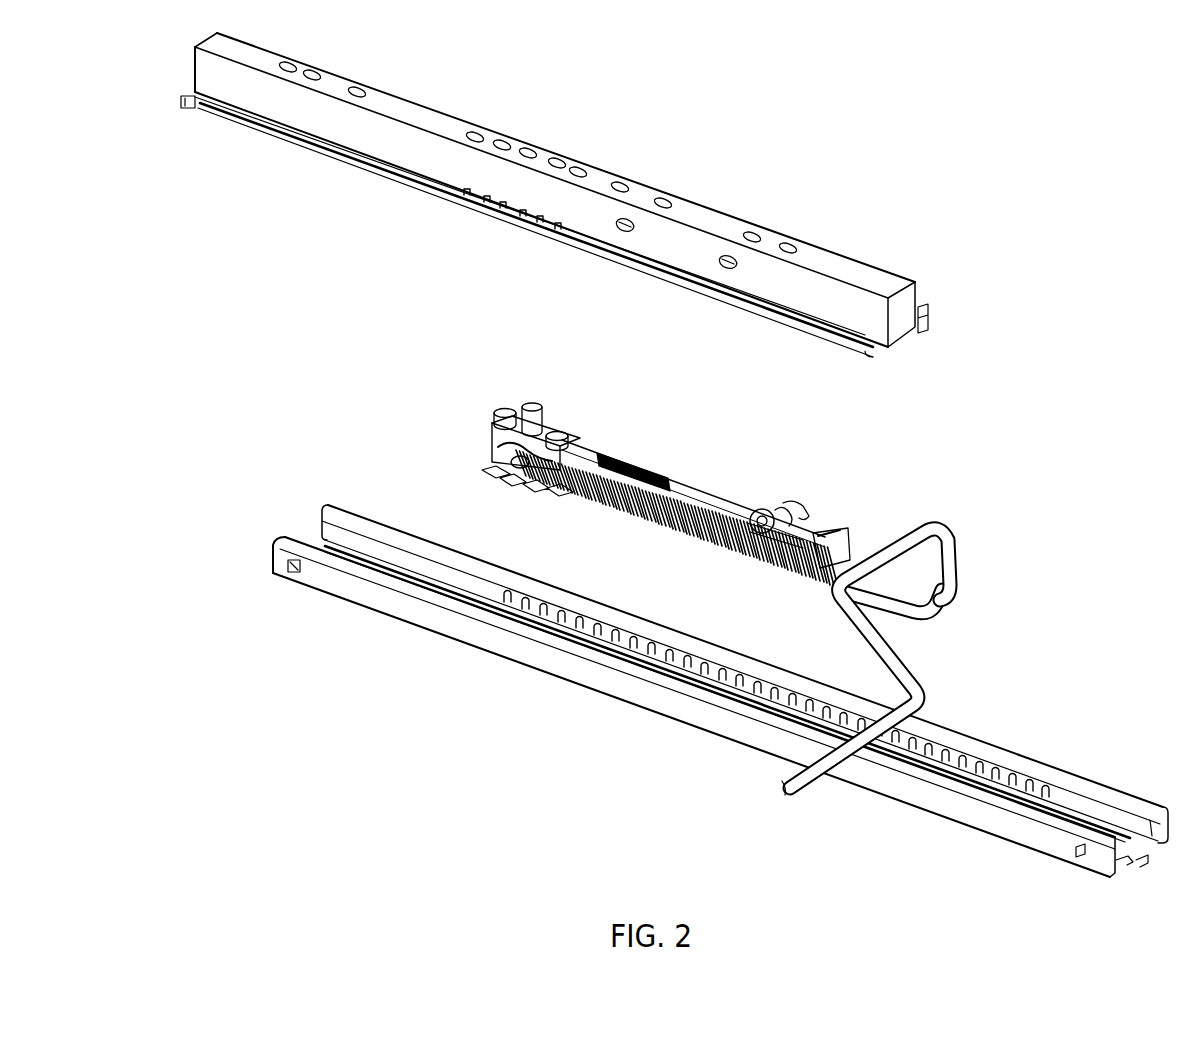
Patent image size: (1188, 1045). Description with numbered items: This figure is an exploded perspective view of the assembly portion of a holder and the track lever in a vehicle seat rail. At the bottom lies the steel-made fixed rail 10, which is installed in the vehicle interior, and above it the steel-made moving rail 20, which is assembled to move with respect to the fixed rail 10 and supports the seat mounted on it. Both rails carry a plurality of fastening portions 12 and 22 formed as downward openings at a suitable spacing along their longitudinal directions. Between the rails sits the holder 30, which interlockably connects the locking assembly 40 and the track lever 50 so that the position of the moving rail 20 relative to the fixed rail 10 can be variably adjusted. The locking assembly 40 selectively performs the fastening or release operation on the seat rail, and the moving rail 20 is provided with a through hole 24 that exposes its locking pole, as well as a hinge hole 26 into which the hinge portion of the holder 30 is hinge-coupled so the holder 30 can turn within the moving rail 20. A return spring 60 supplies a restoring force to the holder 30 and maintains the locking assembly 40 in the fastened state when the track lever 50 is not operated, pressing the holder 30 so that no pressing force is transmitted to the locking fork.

The fixed rail 10 is at (684, 691).
The fastening portions 12 is at (776, 694).
The moving rail 20 is at (548, 195).
The fastening portions 22 is at (482, 222).
The through hole 24 is at (538, 157).
The hinge hole 26 is at (685, 207).
The holder 30 is at (580, 465).
The locking assembly 40 is at (445, 449).
The track lever 50 is at (905, 662).
The return spring 60 is at (779, 488).